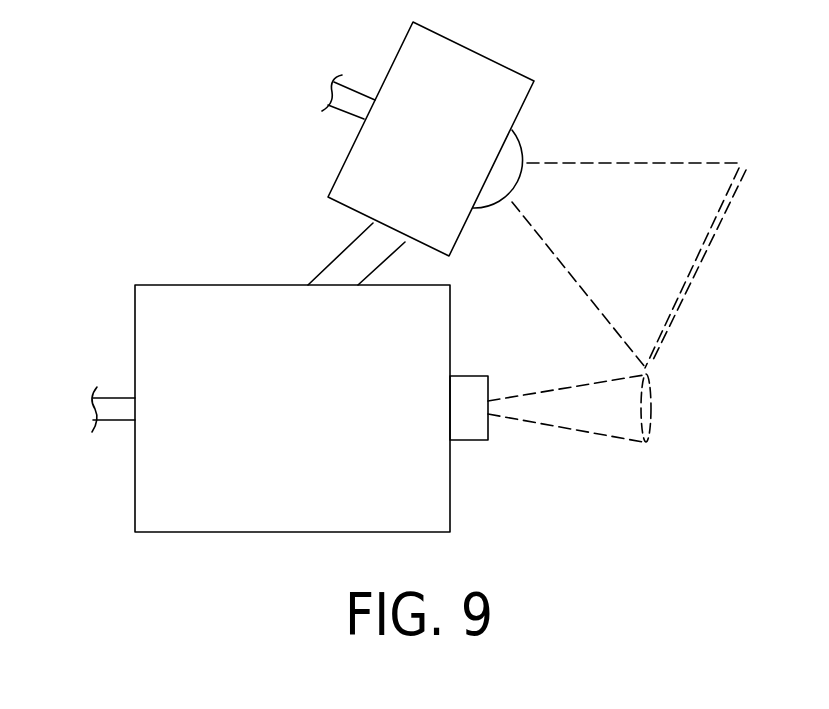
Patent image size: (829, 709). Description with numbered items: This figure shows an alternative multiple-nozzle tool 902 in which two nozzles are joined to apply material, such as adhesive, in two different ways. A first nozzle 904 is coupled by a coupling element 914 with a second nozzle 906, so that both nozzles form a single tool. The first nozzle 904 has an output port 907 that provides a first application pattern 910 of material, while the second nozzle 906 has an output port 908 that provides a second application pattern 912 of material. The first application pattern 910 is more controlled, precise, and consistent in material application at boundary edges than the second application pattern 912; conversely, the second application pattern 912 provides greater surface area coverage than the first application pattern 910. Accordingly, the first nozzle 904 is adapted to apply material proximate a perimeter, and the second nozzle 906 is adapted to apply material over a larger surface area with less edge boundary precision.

The multiple-nozzle tool 902 is at (124, 101).
The first nozzle 904 is at (290, 518).
The second nozzle 906 is at (478, 50).
The output port 907 is at (468, 430).
The output port 908 is at (520, 142).
The first application pattern 910 is at (590, 418).
The second application pattern 912 is at (660, 182).
The coupling element 914 is at (345, 255).